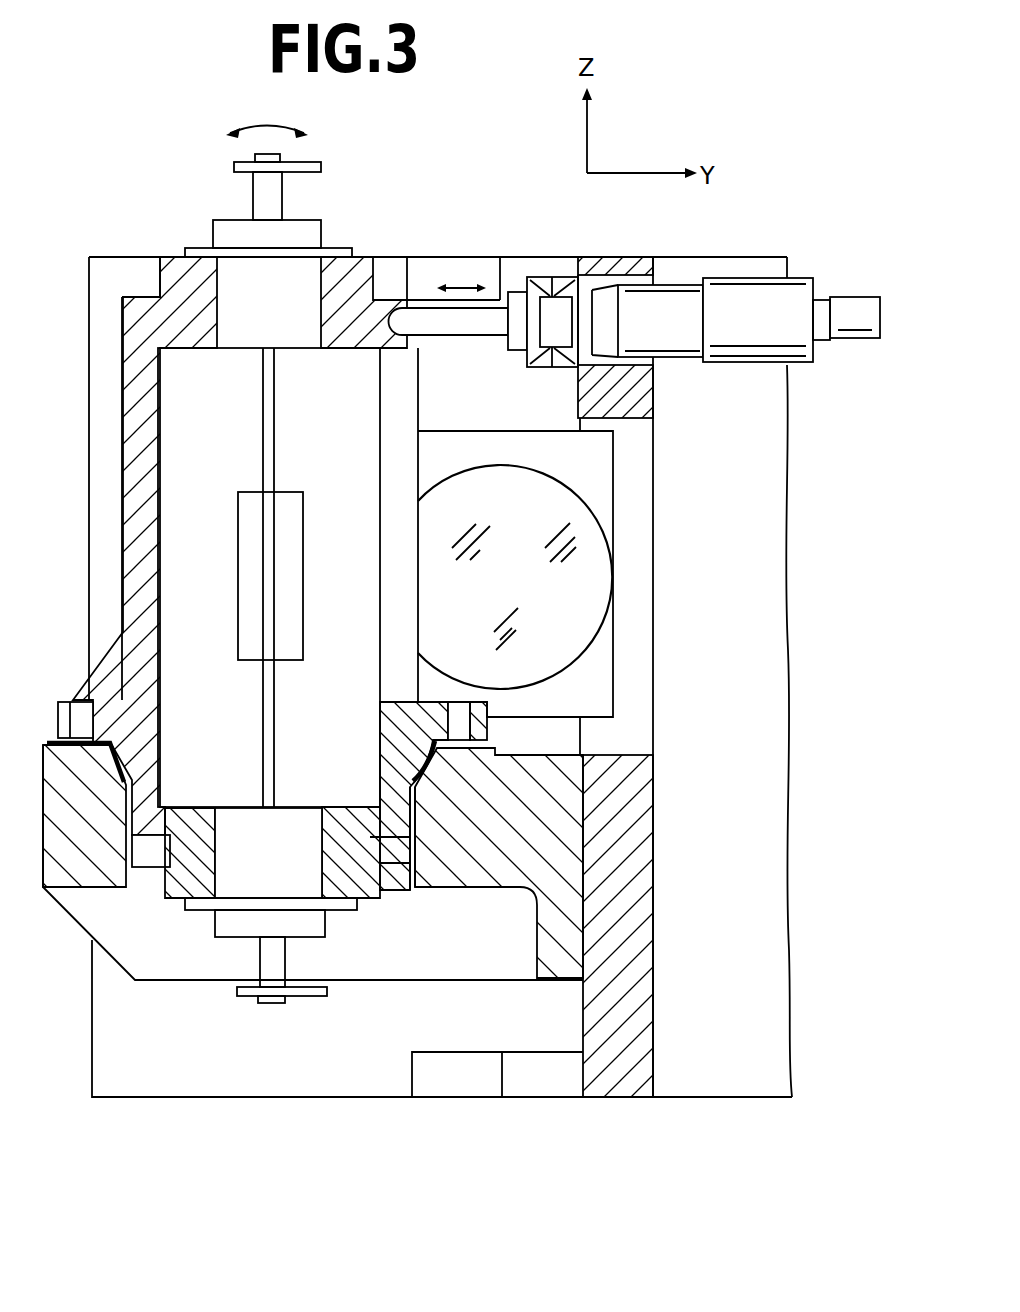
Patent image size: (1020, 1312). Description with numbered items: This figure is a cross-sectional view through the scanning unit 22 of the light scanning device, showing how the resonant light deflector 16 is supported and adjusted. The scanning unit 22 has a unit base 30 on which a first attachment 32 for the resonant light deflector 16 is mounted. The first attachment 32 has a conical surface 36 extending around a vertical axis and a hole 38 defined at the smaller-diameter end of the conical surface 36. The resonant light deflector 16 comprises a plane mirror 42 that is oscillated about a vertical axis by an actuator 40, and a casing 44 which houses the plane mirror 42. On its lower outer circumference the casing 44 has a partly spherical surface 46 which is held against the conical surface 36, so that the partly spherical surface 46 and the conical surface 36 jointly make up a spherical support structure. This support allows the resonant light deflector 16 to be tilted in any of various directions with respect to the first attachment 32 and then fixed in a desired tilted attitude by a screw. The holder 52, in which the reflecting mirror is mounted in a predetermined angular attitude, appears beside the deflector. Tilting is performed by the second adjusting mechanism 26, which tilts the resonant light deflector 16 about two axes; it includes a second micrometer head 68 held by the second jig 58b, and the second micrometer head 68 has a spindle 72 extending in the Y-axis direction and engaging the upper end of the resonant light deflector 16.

The resonant light deflector 16 is at (141, 270).
The scanning unit 22 is at (585, 568).
The second adjusting mechanism 26 is at (810, 257).
The unit base 30 is at (334, 1066).
The first attachment 32 is at (483, 875).
The conical surface 36 is at (425, 775).
The hole 38 is at (394, 876).
The actuator 40 is at (302, 342).
The plane mirror 42 is at (292, 598).
The casing 44 is at (138, 468).
The partly spherical surface 46 is at (120, 752).
The holder 52 is at (603, 470).
The second jig 58b is at (606, 262).
The second micrometer head 68 is at (797, 332).
The spindle 72 is at (473, 332).